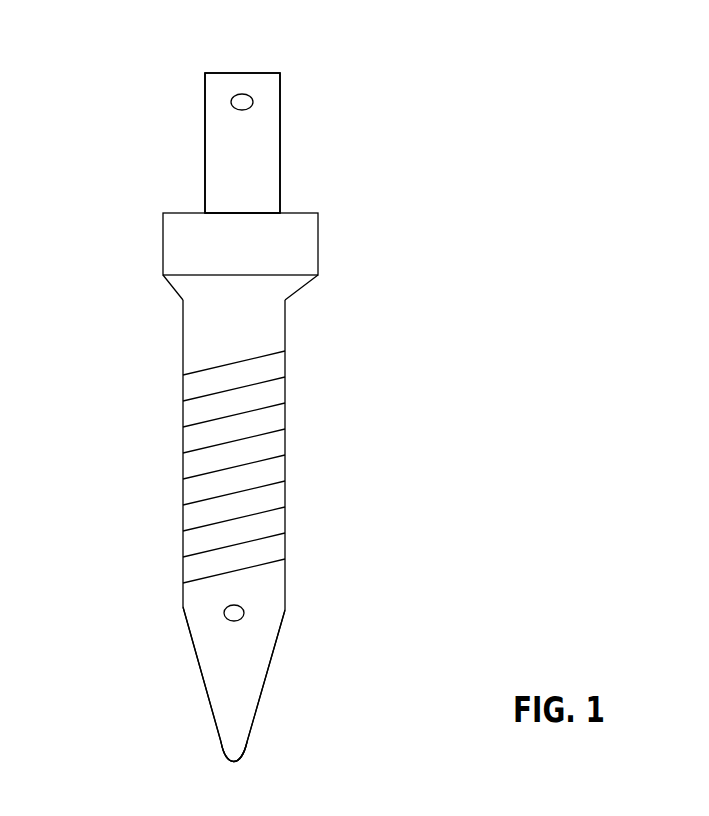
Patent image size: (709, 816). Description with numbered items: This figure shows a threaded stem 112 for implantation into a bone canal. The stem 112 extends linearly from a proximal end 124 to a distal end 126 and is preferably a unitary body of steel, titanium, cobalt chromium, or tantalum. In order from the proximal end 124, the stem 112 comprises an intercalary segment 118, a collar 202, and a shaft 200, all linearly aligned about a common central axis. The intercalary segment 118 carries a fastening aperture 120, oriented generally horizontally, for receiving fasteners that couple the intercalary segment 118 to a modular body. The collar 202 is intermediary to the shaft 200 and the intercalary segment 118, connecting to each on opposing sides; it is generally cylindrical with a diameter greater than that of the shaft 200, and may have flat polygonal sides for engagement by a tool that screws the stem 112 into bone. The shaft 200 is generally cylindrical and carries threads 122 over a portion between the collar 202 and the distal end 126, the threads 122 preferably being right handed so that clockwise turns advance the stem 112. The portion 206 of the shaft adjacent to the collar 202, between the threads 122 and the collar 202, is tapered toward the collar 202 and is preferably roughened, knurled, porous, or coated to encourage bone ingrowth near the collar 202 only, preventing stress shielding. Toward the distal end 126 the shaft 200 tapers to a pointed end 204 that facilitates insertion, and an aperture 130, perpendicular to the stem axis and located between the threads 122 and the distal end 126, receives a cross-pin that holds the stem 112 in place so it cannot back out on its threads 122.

The stem 112 is at (458, 320).
The intercalary segment 118 is at (233, 124).
The fastening aperture 120 is at (231, 100).
The threads 122 is at (250, 452).
The proximal end 124 is at (322, 112).
The distal end 126 is at (283, 715).
The aperture 130 is at (226, 618).
The shaft 200 is at (201, 601).
The collar 202 is at (198, 247).
The pointed end 204 is at (230, 737).
The portion of the shaft adjacent to the collar 206 is at (230, 297).